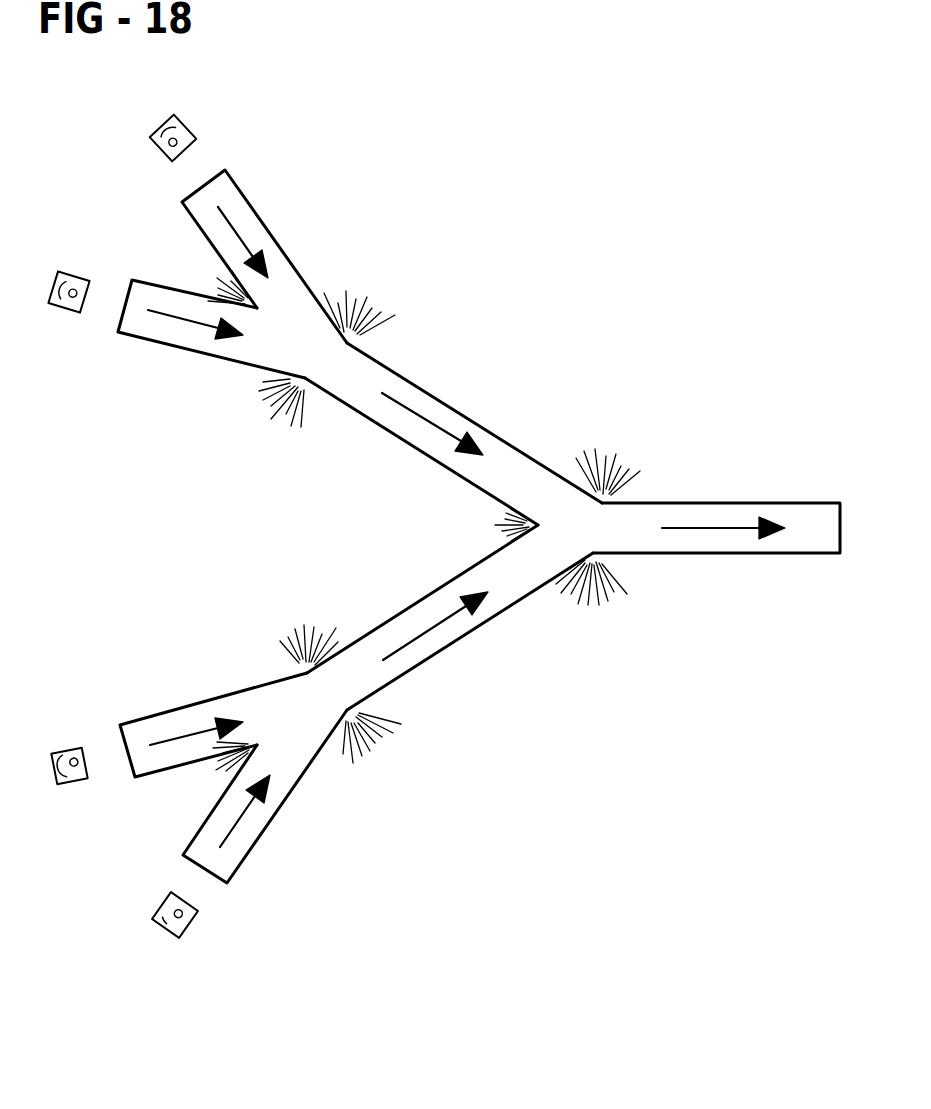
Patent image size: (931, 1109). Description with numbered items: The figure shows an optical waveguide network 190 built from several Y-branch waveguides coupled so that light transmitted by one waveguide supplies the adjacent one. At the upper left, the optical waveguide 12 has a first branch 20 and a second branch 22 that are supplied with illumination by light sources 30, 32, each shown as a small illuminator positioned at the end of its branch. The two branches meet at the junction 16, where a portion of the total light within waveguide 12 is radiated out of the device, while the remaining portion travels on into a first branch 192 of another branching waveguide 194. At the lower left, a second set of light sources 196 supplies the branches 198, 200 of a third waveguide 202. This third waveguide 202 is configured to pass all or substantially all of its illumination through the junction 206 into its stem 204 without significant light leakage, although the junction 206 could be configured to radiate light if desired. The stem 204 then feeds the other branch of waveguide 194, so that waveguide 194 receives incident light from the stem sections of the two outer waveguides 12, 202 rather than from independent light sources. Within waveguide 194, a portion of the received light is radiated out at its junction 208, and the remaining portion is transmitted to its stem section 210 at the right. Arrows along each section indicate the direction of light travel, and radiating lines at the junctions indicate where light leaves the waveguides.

The optical waveguide 12 is at (412, 235).
The junction 16 is at (385, 323).
The first branch 20 is at (272, 228).
The second branch 22 is at (177, 350).
The light source 30 is at (184, 121).
The light source 32 is at (75, 312).
The network 190 is at (659, 697).
The first branch 192 is at (538, 462).
The branching waveguide 194 is at (643, 418).
The second set of light sources 196 is at (83, 782).
The branch 198 is at (178, 707).
The branch 200 is at (270, 828).
The third waveguide 202 is at (356, 821).
The stem 204 is at (400, 600).
The junction 206 is at (402, 731).
The junction 208 is at (641, 464).
The stem section 210 is at (735, 553).